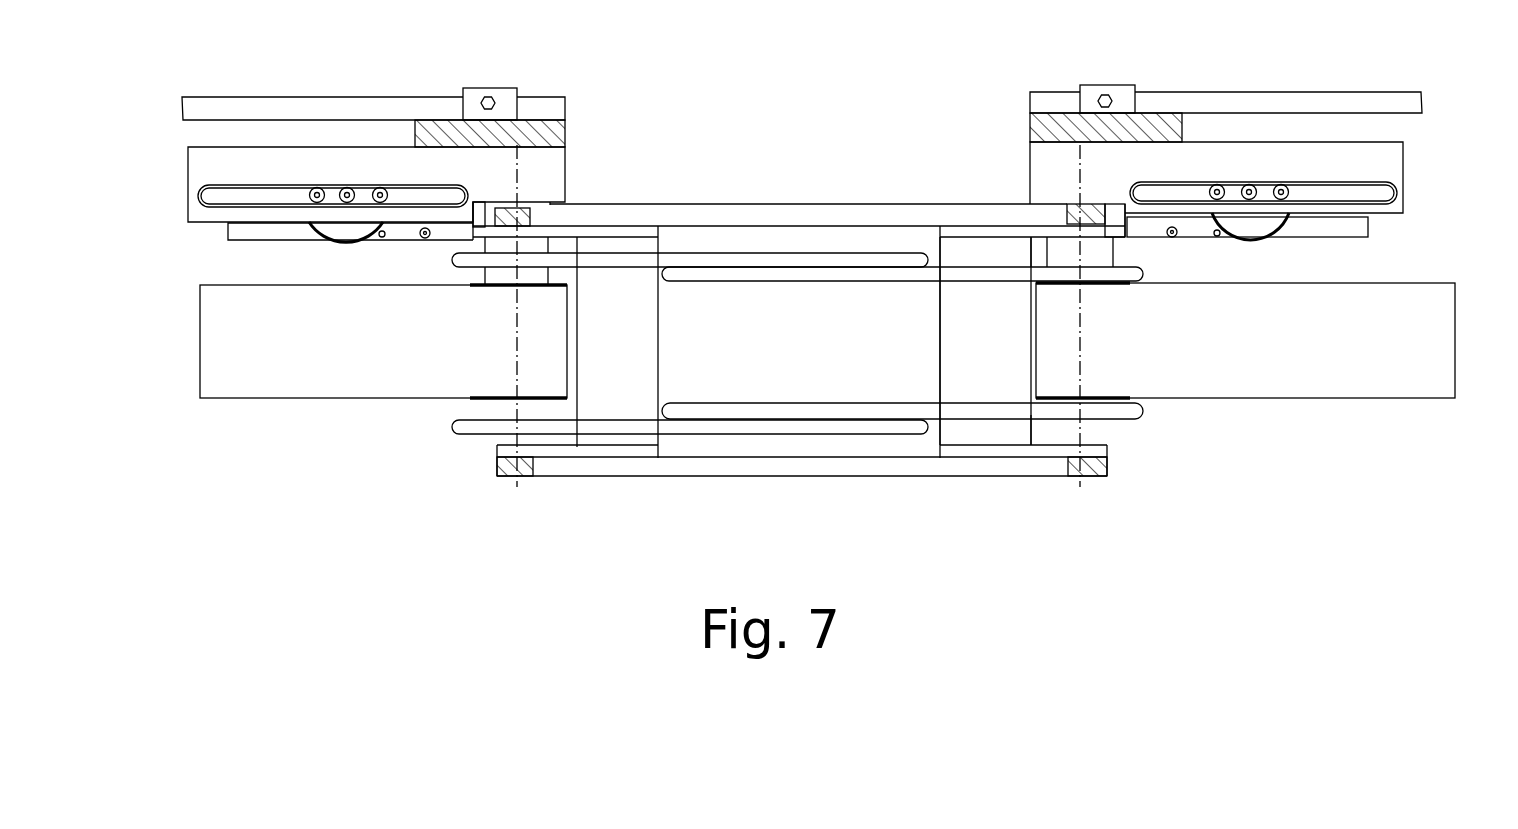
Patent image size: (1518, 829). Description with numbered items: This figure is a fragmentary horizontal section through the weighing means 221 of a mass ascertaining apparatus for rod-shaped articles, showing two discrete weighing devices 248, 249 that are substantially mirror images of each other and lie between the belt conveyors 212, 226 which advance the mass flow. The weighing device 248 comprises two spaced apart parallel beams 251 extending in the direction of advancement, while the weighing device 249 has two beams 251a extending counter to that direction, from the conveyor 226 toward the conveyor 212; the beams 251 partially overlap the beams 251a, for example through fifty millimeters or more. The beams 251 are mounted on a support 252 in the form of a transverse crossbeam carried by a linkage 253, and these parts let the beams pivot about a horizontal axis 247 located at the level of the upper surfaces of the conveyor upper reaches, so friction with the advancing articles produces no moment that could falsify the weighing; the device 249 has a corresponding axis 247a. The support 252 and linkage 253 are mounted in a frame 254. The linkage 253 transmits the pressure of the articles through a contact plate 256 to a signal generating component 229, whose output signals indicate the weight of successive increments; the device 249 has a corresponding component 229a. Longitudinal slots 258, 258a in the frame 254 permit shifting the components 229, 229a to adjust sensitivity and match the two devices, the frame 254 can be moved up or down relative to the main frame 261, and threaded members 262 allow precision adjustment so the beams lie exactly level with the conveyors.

The endless flexible belt conveyor 212 is at (1318, 375).
The weighing means 221 is at (788, 192).
The endless flexible belt conveyor 226 is at (372, 380).
The signal generating component 229 is at (1263, 222).
The signal generating component 229a is at (333, 227).
The horizontal axis 247 is at (1082, 346).
The horizontal axis 247a is at (517, 352).
The weighing device 248 is at (992, 192).
The weighing device 249 is at (607, 190).
The carriers or beams 251 is at (832, 270).
The carriers or beams 251a is at (732, 258).
The support 252 is at (955, 331).
The linkage 253 is at (958, 232).
The frame or housing 254 is at (1098, 477).
The contact plate 256 is at (1346, 226).
The longitudinally extending slot 258 is at (1380, 192).
The longitudinally extending slot 258a is at (227, 197).
The main frame or housing 261 is at (1328, 96).
The threaded members 262 is at (492, 102).